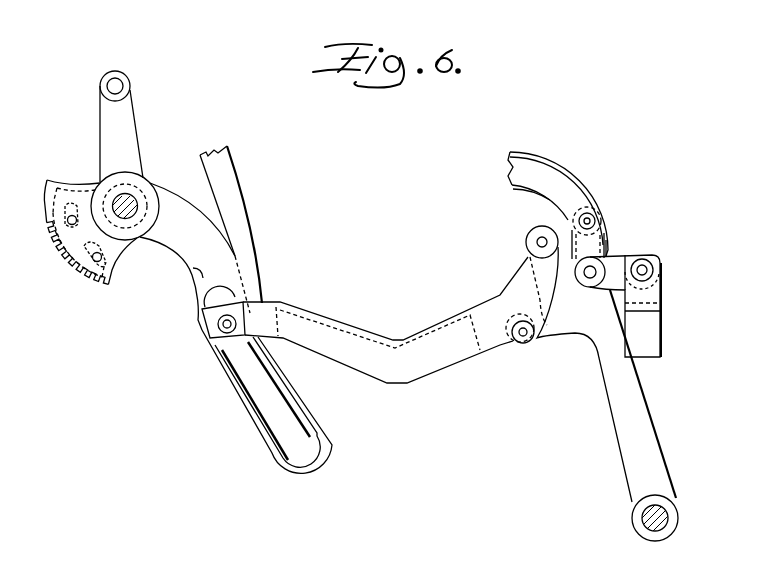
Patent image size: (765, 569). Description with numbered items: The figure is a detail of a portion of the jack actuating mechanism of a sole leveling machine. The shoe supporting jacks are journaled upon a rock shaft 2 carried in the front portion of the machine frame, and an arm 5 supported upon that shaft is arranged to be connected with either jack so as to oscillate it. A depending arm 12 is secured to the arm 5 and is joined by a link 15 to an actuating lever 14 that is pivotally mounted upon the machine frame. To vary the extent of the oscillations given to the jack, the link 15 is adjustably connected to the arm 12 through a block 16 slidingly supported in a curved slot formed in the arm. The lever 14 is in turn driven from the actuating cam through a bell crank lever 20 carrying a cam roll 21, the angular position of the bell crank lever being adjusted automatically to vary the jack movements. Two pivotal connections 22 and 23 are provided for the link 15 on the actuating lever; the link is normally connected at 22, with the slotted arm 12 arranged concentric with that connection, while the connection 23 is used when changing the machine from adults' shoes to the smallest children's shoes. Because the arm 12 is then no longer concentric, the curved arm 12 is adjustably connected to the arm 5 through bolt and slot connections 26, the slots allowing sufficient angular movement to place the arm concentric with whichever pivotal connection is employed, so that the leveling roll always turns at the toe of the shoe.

The rock shaft 2 is at (130, 200).
The arm 5 is at (127, 143).
The depending arm 12 is at (322, 430).
The actuating lever 14 is at (651, 446).
The link 15 is at (450, 356).
The block 16 is at (220, 347).
The bell crank lever 20 is at (619, 262).
The cam roll 21 is at (640, 186).
The pivotal connection 22 is at (533, 236).
The pivotal connection 23 is at (523, 342).
The bolt and slot connections 26 is at (69, 221).